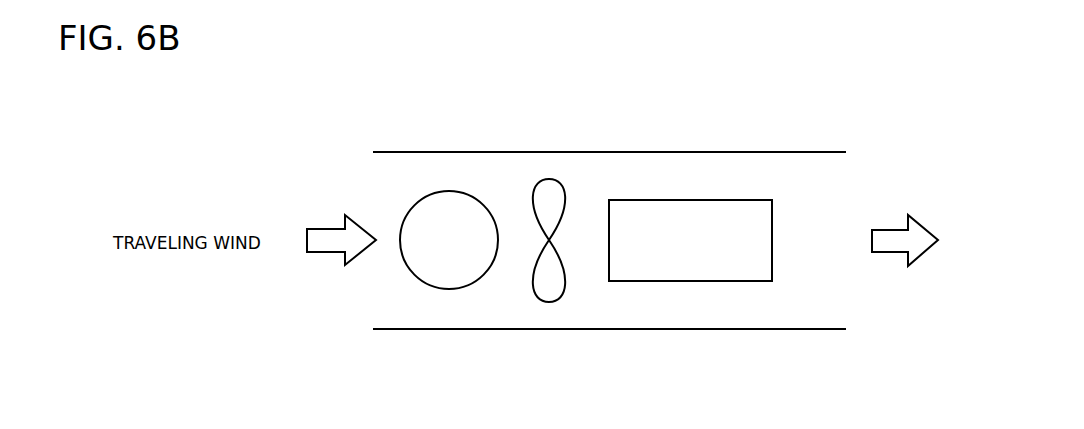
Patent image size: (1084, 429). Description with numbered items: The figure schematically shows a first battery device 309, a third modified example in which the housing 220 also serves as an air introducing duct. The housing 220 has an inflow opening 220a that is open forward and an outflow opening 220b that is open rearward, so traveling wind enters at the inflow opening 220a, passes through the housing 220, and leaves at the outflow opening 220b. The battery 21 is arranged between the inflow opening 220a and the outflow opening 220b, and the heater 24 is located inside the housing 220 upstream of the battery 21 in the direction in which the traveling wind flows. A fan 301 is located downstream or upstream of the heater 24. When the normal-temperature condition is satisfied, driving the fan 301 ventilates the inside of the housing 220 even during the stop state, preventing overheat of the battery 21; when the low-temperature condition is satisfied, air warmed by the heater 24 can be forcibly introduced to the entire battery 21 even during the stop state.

The first battery device 309 is at (788, 138).
The housing 220 is at (536, 152).
The inflow opening 220a is at (375, 291).
The outflow opening 220b is at (847, 289).
The heater 24 is at (445, 289).
The fan 301 is at (548, 302).
The battery 21 is at (731, 200).